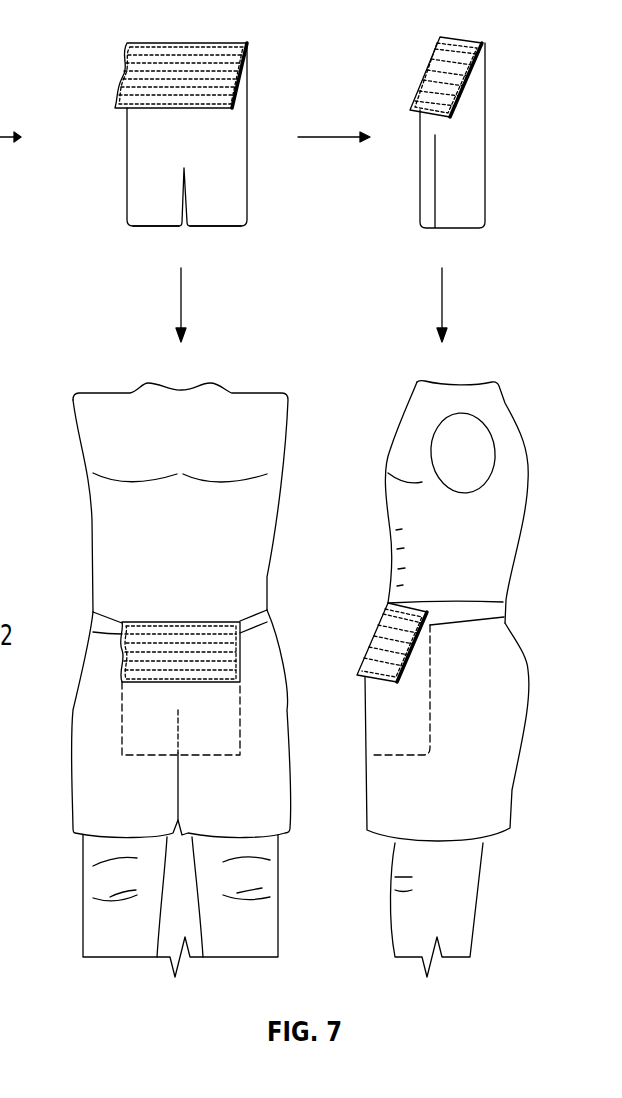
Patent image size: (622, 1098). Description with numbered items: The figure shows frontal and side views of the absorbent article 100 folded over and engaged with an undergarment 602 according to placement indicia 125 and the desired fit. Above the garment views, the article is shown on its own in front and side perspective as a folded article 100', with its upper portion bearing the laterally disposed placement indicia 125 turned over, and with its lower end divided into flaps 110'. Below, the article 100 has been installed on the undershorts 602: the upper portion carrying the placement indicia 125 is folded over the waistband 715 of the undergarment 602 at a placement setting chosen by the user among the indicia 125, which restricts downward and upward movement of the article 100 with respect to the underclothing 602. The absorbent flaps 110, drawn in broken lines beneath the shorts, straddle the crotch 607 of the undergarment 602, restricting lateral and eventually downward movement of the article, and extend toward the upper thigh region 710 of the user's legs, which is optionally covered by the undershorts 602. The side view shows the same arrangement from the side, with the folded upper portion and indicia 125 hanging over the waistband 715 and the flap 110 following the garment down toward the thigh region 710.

The folded garment 100' is at (306, 135).
The placement indicia 125 is at (130, 60).
The leg openings of folded garment 110' is at (189, 242).
The absorbent article 100 is at (311, 617).
The undergarment 602 is at (275, 652).
The waistband 715 is at (100, 620).
The thigh region 710 is at (145, 737).
The absorbent flaps 110 is at (272, 709).
The crotch 607 is at (180, 723).